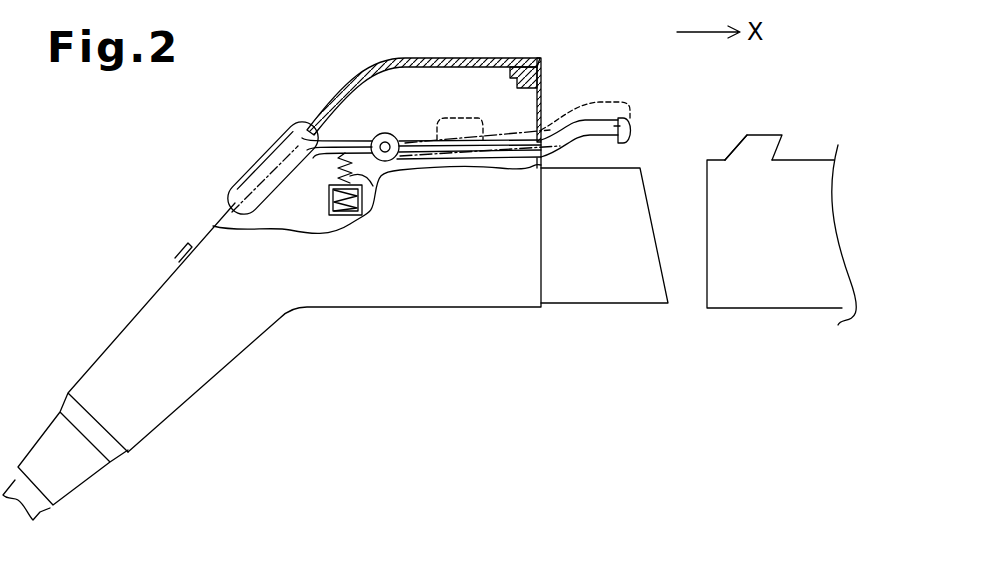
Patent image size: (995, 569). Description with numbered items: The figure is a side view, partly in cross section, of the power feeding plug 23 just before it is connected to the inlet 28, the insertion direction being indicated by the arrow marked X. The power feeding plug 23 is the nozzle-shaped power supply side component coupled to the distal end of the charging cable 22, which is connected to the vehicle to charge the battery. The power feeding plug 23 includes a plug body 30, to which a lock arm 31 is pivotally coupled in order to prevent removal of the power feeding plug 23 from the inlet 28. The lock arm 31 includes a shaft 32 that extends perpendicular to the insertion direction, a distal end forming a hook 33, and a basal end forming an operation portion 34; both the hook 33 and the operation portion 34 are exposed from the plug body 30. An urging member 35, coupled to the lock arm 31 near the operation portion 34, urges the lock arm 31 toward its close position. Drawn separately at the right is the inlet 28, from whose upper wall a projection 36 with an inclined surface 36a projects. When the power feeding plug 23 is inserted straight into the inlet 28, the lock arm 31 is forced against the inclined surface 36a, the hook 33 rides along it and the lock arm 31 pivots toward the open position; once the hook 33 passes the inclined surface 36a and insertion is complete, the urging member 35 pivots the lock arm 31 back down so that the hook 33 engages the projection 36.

The charging cable 22 is at (38, 512).
The power feeding plug 23 is at (473, 310).
The inlet 28 is at (777, 298).
The plug body 30 is at (377, 293).
The lock arm 31 is at (481, 127).
The shaft 32 is at (386, 142).
The hook 33 is at (631, 128).
The operation portion 34 is at (262, 152).
The urging member 35 is at (373, 189).
The projection 36 is at (772, 142).
The inclined surface 36a is at (738, 142).